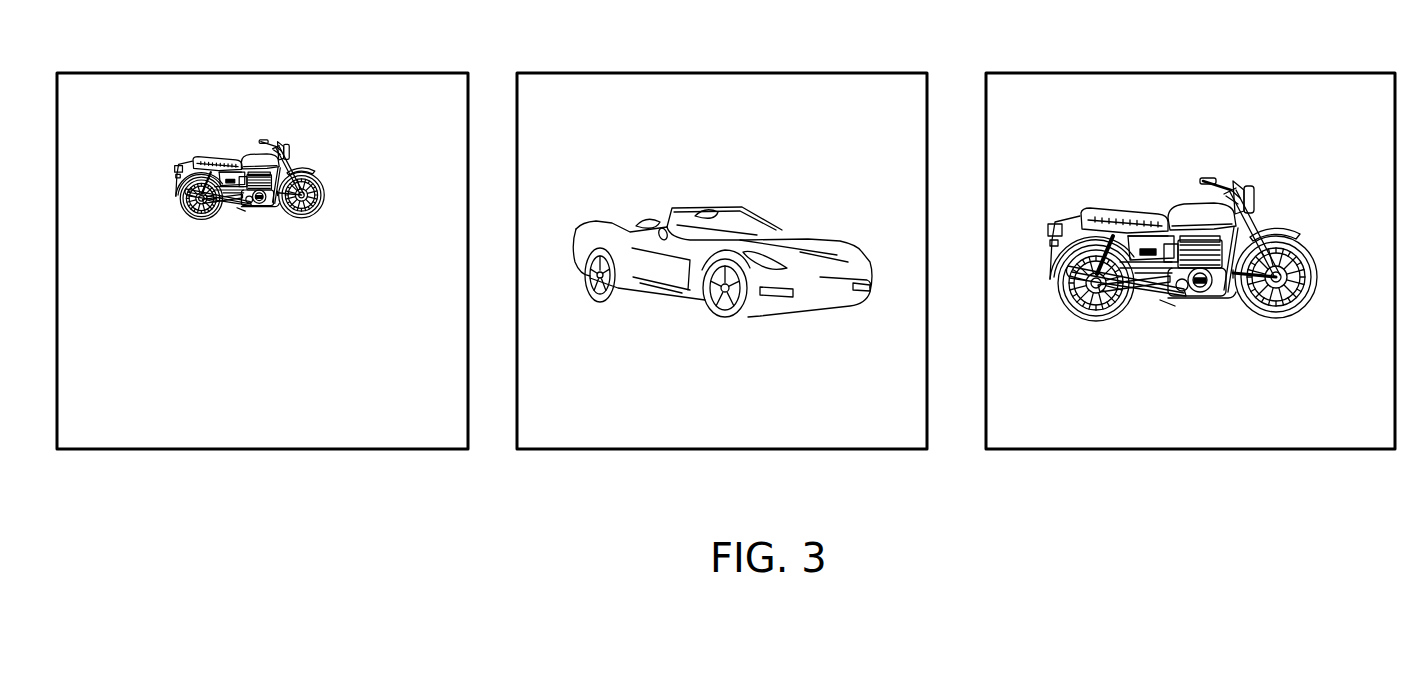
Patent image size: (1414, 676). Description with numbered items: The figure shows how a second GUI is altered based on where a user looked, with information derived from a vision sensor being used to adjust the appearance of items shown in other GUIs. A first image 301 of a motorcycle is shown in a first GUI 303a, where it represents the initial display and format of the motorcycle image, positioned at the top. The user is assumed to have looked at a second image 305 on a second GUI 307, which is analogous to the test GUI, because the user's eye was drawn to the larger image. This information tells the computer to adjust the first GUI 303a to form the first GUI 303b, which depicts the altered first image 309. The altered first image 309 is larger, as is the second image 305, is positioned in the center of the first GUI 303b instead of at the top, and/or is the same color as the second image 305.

The first GUI 303a is at (262, 73).
The first image 301 is at (247, 208).
The second GUI 307 is at (722, 73).
The second image 305 is at (673, 300).
The first GUI 303b is at (1190, 73).
The altered first image 309 is at (1183, 298).